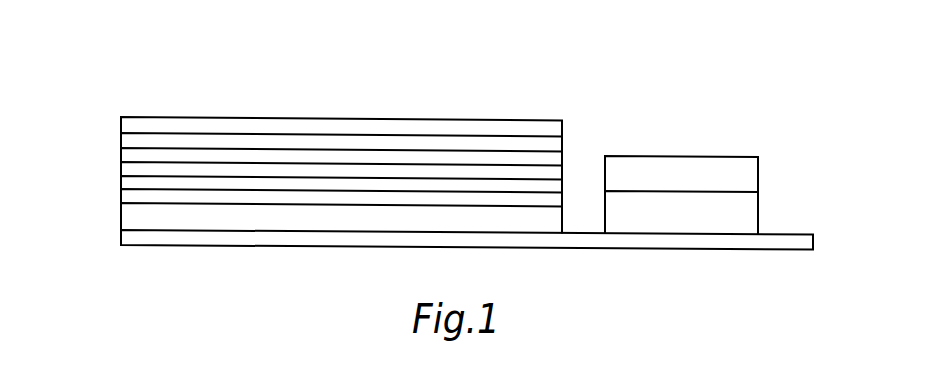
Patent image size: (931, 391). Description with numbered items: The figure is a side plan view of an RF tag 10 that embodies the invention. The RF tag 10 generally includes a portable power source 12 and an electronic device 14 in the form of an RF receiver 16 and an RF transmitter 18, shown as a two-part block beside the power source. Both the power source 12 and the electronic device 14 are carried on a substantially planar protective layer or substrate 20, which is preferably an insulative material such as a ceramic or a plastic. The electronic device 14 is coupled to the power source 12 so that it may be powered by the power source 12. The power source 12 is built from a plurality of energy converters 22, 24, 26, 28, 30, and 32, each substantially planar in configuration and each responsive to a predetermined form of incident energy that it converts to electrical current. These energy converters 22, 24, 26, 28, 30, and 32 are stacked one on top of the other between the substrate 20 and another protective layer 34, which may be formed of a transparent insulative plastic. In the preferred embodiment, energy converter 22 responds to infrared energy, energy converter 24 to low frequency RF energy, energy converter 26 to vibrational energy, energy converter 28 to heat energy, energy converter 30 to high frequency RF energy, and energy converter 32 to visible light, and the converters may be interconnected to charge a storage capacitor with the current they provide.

The RF tag 10 is at (576, 80).
The portable power source 12 is at (322, 92).
The electronic device 14 is at (700, 123).
The RF receiver 16 is at (752, 170).
The RF transmitter 18 is at (750, 217).
The substrate 20 is at (763, 245).
The energy converter 22 is at (125, 215).
The energy converter 24 is at (125, 197).
The energy converter 26 is at (125, 182).
The energy converter 28 is at (125, 171).
The energy converter 30 is at (125, 159).
The energy converter 32 is at (118, 143).
The protective layer 34 is at (135, 123).